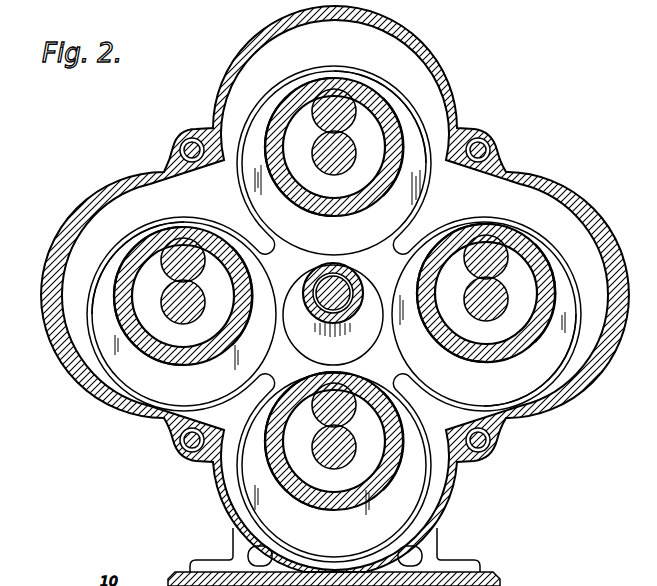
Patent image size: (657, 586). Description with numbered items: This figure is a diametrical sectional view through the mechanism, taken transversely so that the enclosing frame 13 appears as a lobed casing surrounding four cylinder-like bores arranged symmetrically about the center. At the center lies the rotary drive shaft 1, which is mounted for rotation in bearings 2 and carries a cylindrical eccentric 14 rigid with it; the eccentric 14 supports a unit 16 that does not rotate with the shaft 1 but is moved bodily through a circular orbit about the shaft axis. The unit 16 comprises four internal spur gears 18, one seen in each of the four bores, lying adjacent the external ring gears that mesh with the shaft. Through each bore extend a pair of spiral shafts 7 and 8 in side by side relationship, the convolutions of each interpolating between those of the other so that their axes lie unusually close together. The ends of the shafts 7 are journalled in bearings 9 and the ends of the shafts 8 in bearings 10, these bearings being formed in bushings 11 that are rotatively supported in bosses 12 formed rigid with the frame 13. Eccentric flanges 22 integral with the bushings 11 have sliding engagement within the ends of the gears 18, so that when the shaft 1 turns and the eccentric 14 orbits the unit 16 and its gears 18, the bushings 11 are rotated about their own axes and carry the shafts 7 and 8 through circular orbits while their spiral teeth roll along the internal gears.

The rotary drive shaft 1 is at (346, 279).
The bearings 2 is at (313, 274).
The spiral shaft 7 is at (340, 178).
The spiral shaft 8 is at (341, 100).
The bearings 9 is at (290, 166).
The bearings 10 is at (296, 115).
The bushings 11 is at (387, 147).
The bosses 12 is at (327, 93).
The enclosing frame 13 is at (225, 80).
The cylindrical eccentric 14 is at (327, 348).
The unit 16 is at (280, 257).
The internal spur gears 18 is at (415, 113).
The eccentric flanges 22 is at (400, 211).